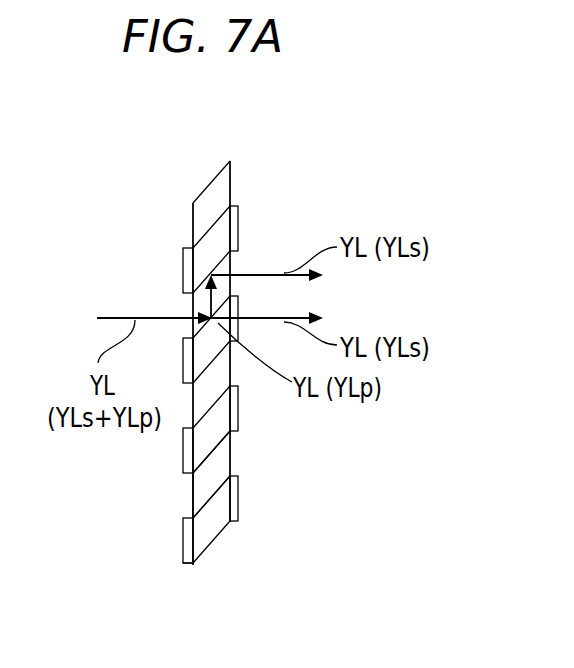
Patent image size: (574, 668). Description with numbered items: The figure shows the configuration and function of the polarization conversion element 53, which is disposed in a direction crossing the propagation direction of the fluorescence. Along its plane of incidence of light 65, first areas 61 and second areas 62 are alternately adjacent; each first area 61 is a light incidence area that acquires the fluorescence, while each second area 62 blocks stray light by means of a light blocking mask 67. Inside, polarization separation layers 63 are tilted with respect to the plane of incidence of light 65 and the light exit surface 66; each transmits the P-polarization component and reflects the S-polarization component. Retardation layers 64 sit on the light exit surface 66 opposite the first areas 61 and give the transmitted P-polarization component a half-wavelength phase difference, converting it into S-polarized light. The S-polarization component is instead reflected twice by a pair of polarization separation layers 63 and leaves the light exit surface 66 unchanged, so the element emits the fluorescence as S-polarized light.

The polarization conversion element 53 is at (205, 175).
The first area 61 is at (180, 498).
The second area 62 is at (172, 553).
The polarization separation layer 63 is at (210, 507).
The retardation layer 64 is at (239, 413).
The plane of incidence of light 65 is at (191, 226).
The light exit surface 66 is at (231, 188).
The light blocking mask 67 is at (190, 564).